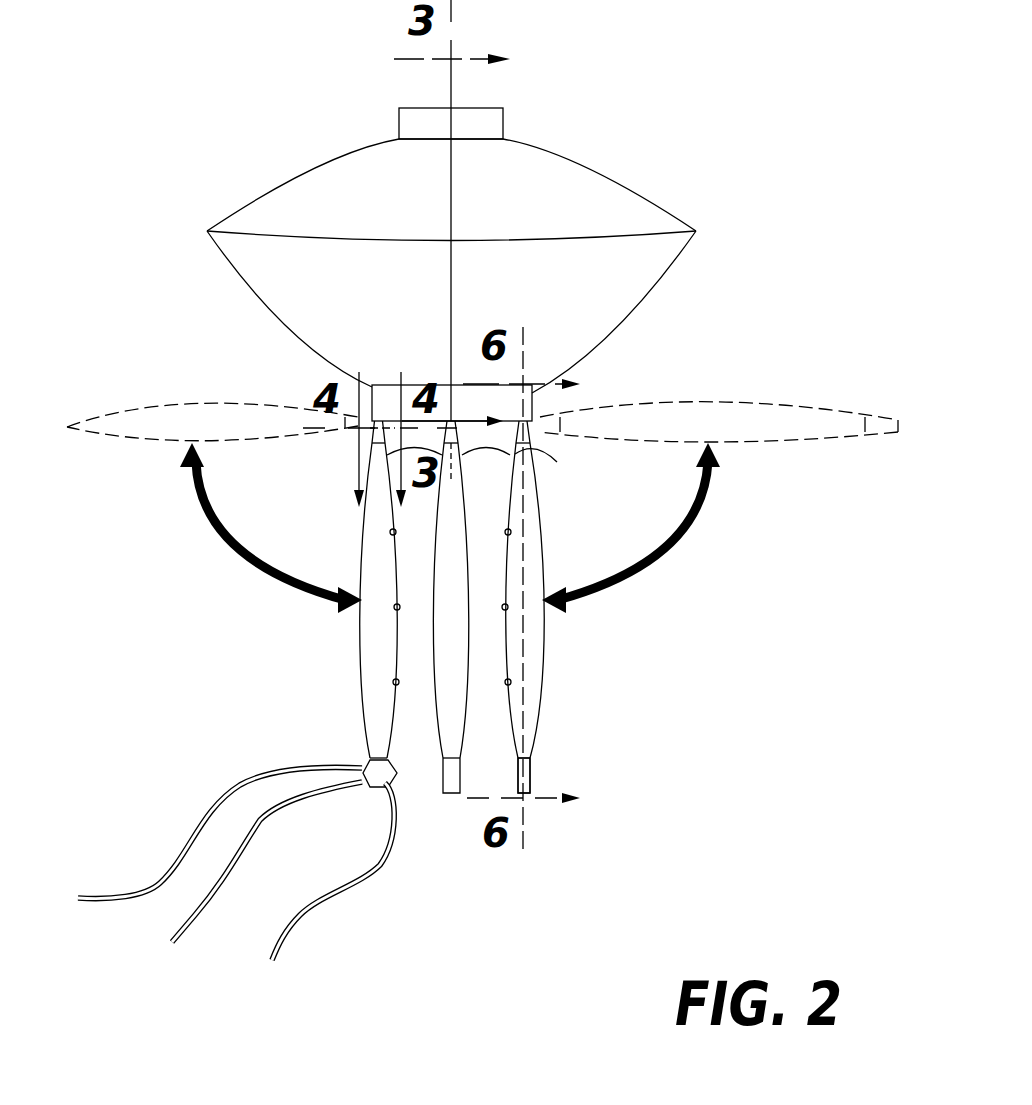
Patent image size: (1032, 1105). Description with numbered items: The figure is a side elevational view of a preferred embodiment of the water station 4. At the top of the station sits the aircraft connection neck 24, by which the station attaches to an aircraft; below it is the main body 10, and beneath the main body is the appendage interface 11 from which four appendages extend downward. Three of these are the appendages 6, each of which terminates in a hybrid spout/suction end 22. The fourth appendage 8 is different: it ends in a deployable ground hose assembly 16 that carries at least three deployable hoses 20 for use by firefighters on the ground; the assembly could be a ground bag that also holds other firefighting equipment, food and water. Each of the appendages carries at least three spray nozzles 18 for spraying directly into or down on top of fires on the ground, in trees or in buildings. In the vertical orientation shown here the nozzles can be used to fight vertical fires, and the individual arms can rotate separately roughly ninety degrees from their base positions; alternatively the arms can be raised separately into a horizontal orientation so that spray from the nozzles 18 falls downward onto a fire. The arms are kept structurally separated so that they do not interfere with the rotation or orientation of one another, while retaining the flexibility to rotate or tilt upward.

The water station 4 is at (205, 97).
The aircraft connection neck 24 is at (399, 108).
The main body 10 is at (647, 305).
The appendage interface 11 is at (420, 385).
The fourth appendage 8 is at (360, 653).
The appendages 6 is at (462, 718).
The spray nozzles 18 is at (399, 680).
The hybrid spout/suction end 22 is at (518, 783).
The deployable ground hose assembly 16 is at (380, 788).
The deployable hoses 20 is at (277, 942).